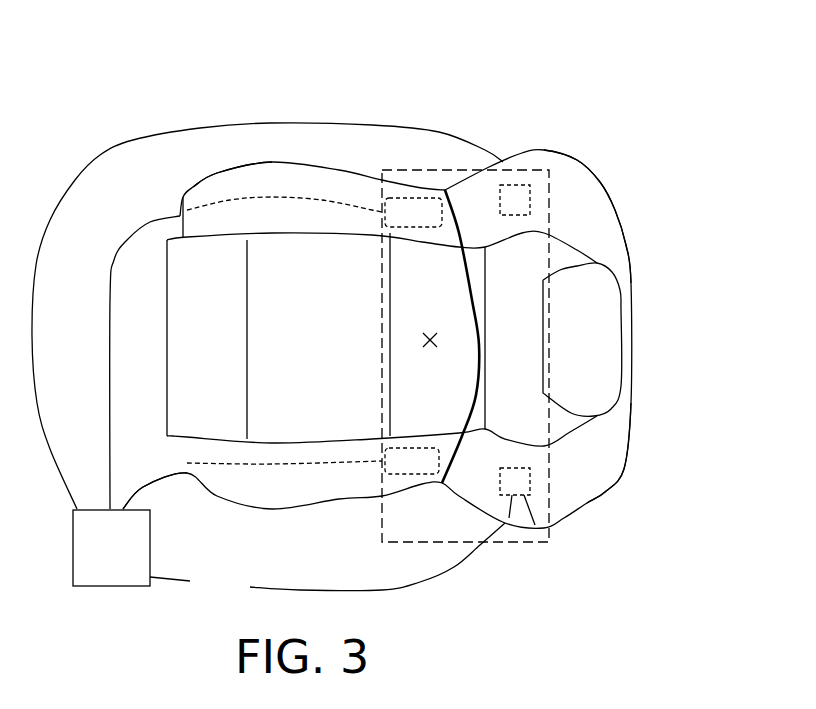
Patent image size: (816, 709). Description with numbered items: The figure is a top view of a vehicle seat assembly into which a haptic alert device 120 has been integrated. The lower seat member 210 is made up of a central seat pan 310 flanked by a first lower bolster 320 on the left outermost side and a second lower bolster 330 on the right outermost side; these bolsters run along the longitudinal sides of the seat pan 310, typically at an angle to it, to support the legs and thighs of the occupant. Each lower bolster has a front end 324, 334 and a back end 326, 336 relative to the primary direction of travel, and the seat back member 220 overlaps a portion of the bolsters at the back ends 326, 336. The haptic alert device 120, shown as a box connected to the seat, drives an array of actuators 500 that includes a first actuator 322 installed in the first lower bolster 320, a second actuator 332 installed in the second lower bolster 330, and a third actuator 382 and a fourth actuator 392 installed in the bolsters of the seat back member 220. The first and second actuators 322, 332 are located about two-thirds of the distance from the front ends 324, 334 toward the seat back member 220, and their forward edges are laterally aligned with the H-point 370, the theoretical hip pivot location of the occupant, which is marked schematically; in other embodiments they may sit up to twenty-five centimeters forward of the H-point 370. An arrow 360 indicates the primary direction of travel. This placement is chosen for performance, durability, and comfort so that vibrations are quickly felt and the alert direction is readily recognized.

The haptic alert device 120 is at (172, 551).
The lower seat member 210 is at (353, 537).
The seat back member 220 is at (564, 518).
The seat pan 310 is at (173, 349).
The first lower bolster 320 is at (187, 459).
The first actuator 322 is at (405, 469).
The front end of first lower bolster 324 is at (187, 486).
The back end of first lower bolster 326 is at (589, 503).
The second lower bolster 330 is at (180, 217).
The second actuator 332 is at (415, 203).
The front end of second lower bolster 334 is at (193, 188).
The back end of second lower bolster 336 is at (587, 173).
The direction of movement 360 is at (255, 473).
The H-point 370 is at (434, 349).
The third actuator 382 is at (517, 185).
The fourth actuator 392 is at (509, 518).
The array of actuators 500 is at (467, 166).